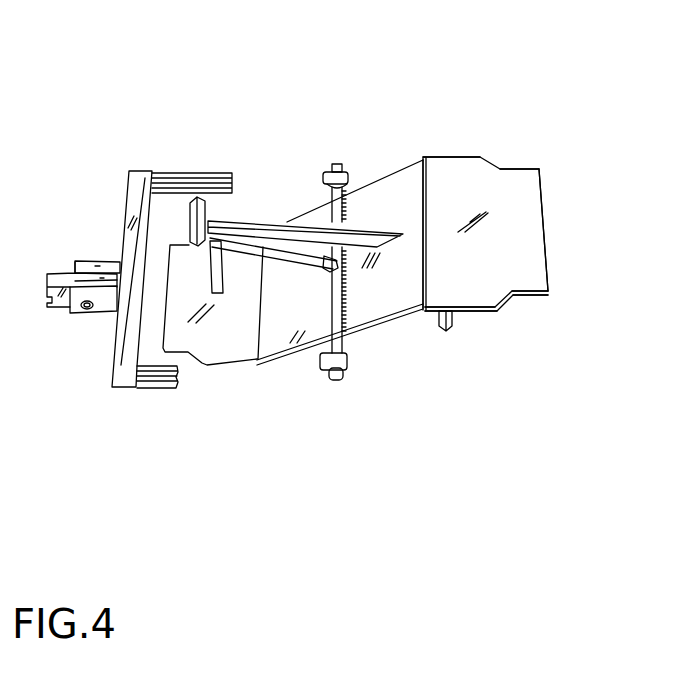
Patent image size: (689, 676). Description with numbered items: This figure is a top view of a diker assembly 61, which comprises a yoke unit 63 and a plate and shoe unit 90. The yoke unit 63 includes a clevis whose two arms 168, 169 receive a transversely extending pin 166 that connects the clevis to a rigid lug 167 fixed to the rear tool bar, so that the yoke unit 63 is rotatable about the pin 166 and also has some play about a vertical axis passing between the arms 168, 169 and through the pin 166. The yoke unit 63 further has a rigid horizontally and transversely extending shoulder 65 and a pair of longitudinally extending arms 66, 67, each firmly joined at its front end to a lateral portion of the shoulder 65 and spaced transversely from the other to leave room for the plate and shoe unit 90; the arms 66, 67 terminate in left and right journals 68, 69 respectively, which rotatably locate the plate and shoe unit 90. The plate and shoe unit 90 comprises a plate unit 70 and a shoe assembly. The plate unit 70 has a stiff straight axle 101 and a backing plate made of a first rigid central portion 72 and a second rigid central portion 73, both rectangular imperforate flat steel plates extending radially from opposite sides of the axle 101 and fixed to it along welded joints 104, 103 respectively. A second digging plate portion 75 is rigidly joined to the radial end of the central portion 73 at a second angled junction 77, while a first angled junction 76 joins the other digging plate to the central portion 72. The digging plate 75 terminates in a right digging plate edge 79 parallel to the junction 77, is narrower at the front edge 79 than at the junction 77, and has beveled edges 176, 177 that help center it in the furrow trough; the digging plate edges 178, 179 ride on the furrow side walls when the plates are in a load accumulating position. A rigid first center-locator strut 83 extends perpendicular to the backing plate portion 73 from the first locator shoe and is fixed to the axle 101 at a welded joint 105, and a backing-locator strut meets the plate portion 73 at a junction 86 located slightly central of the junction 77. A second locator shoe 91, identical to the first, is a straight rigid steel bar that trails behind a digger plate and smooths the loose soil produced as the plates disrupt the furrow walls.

The diker assembly 61 is at (447, 530).
The yoke unit 63 is at (198, 470).
The shoulder 65 is at (135, 198).
The arm 66 is at (157, 384).
The arm 67 is at (202, 173).
The left journal 68 is at (347, 375).
The right journal 69 is at (330, 165).
The plate unit 70 is at (528, 60).
The first rigid central portion 72 is at (275, 352).
The second rigid central portion 73 is at (392, 185).
The second digging plate portion 75 is at (477, 177).
The first angled junction 76 is at (258, 365).
The second angled junction 77 is at (428, 178).
The right digging plate edge 79 is at (543, 207).
The first center-locator strut 83 is at (263, 222).
The first backing-locator strut junction 86 is at (410, 259).
The plate and shoe unit 90 is at (527, 463).
The second locator shoe 91 is at (448, 330).
The axle 101 is at (337, 297).
The welded joint 103 is at (343, 225).
The welded joint 104 is at (323, 320).
The welded joint 105 is at (325, 270).
The pin 166 is at (85, 310).
The lug 167 is at (58, 274).
The arm of clevis 168 is at (107, 263).
The arm of clevis 169 is at (108, 300).
The beveled edge 176 is at (497, 168).
The beveled edge 177 is at (502, 300).
The digging plate edge 178 is at (455, 158).
The digging plate edge 179 is at (478, 312).